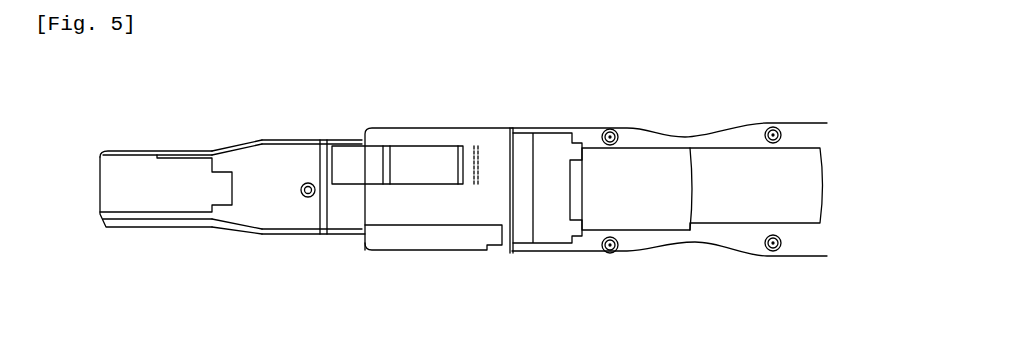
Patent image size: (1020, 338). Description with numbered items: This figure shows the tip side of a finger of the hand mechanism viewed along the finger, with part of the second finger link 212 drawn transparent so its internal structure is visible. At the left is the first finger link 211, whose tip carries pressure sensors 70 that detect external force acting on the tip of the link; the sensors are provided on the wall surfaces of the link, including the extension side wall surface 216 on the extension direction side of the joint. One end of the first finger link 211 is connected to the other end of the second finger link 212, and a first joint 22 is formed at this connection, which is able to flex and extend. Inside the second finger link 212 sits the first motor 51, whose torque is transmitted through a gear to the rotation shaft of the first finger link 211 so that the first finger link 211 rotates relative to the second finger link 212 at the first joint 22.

The pressure sensor 70 is at (143, 184).
The extension side wall surface 216 is at (215, 165).
The first finger link 211 is at (270, 212).
The first joint 22 is at (420, 163).
The second finger link 212 is at (737, 240).
The first motor 51 is at (732, 168).